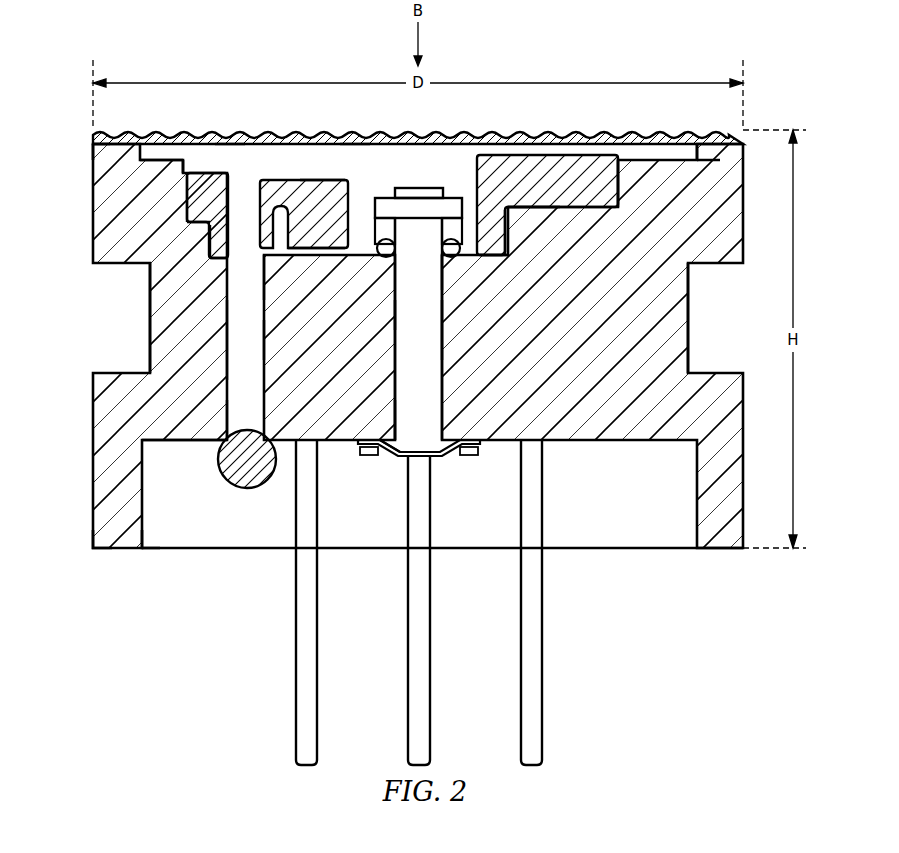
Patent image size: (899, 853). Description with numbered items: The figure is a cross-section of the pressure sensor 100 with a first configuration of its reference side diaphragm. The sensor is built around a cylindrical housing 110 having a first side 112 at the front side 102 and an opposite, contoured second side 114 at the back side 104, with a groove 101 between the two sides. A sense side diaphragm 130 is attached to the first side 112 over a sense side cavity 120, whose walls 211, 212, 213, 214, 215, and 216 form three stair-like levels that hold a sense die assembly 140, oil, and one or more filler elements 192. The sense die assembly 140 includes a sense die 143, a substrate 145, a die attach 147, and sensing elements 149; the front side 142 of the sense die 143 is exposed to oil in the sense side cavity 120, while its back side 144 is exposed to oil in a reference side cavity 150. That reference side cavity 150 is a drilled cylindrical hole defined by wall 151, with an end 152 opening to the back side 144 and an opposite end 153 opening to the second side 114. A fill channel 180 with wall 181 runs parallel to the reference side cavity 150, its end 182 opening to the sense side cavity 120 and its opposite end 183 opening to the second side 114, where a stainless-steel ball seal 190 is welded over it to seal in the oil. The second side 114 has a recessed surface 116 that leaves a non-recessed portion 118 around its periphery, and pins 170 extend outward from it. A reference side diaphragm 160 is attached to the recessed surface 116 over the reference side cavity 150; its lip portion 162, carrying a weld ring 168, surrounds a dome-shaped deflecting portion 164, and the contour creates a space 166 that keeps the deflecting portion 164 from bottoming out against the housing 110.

The pressure sensor 100 is at (131, 47).
The groove 101 is at (150, 300).
The front side 102 is at (96, 132).
The back side 104 is at (143, 553).
The housing 110 is at (93, 240).
The first side 112 is at (94, 150).
The second side 114 is at (101, 553).
The recessed surface 116 is at (184, 450).
The non-recessed portion 118 is at (716, 550).
The sense side cavity 120 is at (233, 132).
The sense side diaphragm 130 is at (376, 132).
The sense die assembly 140 is at (351, 180).
The front side of the sense die 142 is at (357, 132).
The sense die 143 is at (405, 216).
The back side of the sense die 144 is at (418, 232).
The substrate 145 is at (453, 257).
The die attach 147 is at (374, 252).
The sensing elements 149 is at (419, 192).
The reference side cavity 150 is at (450, 340).
The wall of the reference side cavity 151 is at (393, 318).
The end of the reference side cavity 152 is at (446, 272).
The opposite end of the reference side cavity 153 is at (394, 425).
The reference side diaphragm 160 is at (446, 458).
The lip portion 162 is at (371, 440).
The deflecting portion 164 is at (399, 458).
The space 166 is at (437, 440).
The weld ring 168 is at (367, 456).
The pins 170 is at (296, 655).
The fill channel 180 is at (226, 352).
The wall of the fill channel 181 is at (226, 320).
The end of the fill channel 182 is at (265, 292).
The opposite end of the fill channel 183 is at (226, 432).
The seal 190 is at (234, 467).
The filler elements 192 is at (194, 211).
The wall of the sense side cavity 211 is at (216, 262).
The wall of the sense side cavity 212 is at (219, 242).
The wall of the sense side cavity 213 is at (197, 228).
The wall of the sense side cavity 214 is at (183, 200).
The wall of the sense side cavity 215 is at (171, 176).
The wall of the sense side cavity 216 is at (120, 162).